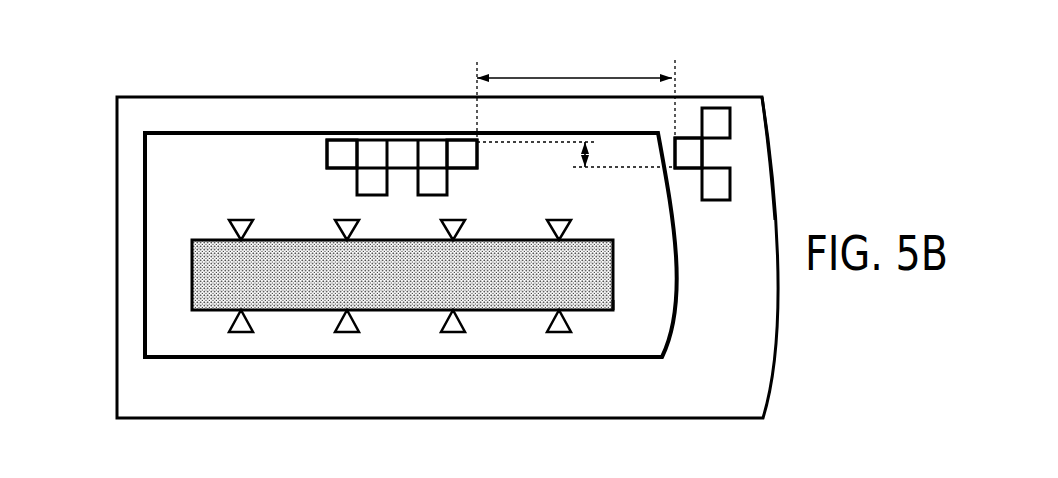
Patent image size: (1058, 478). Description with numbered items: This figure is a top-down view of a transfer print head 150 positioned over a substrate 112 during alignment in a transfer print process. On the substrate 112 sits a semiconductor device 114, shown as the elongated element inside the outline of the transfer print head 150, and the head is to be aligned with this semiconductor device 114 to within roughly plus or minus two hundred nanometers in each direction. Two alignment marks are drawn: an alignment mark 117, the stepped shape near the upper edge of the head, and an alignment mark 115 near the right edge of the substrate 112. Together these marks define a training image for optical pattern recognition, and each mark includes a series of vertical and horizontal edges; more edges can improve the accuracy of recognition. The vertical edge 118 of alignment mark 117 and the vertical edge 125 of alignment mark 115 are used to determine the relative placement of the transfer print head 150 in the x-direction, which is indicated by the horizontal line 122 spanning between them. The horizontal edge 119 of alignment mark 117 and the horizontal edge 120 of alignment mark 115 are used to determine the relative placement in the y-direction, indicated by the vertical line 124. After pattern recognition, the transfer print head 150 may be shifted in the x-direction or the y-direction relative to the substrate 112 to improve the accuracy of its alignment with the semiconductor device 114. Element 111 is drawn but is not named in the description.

The substrate 111 is at (200, 240).
The substrate 112 is at (130, 115).
The semiconductor device 114 is at (617, 318).
The alignment mark 115 is at (733, 102).
The alignment mark 117 is at (363, 143).
The vertical edge 118 is at (477, 158).
The horizontal edge 119 is at (457, 140).
The horizontal edge 120 is at (718, 167).
The horizontal line 122 is at (570, 77).
The vertical line 124 is at (577, 157).
The vertical edge 125 is at (678, 155).
The transfer print head 150 is at (657, 310).